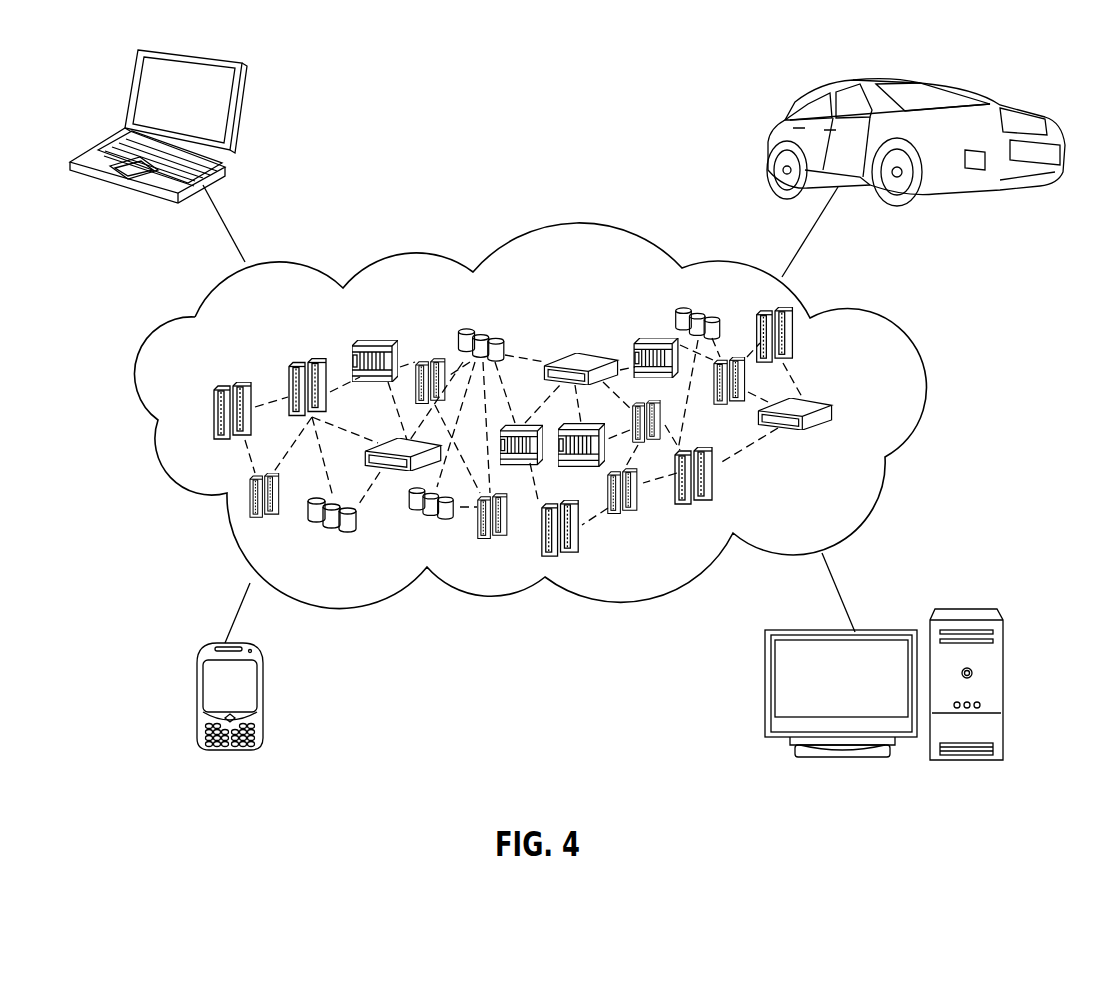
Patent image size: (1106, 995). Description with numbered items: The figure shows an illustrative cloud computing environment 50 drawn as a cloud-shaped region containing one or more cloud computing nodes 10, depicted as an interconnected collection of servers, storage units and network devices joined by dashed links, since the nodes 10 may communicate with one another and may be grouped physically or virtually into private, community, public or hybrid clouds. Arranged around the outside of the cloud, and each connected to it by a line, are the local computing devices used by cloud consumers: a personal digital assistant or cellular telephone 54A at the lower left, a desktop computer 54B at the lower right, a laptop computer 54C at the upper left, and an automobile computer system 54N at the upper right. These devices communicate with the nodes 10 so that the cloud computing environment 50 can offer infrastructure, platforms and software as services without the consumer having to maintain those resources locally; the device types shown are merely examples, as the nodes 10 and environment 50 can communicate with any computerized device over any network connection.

The cloud computing nodes 10 is at (872, 412).
The cloud computing environment 50 is at (893, 330).
The personal digital assistant (PDA) or cellular telephone 54A is at (200, 698).
The desktop computer 54B is at (972, 608).
The laptop computer 54C is at (233, 115).
The automobile computer system 54N is at (772, 122).